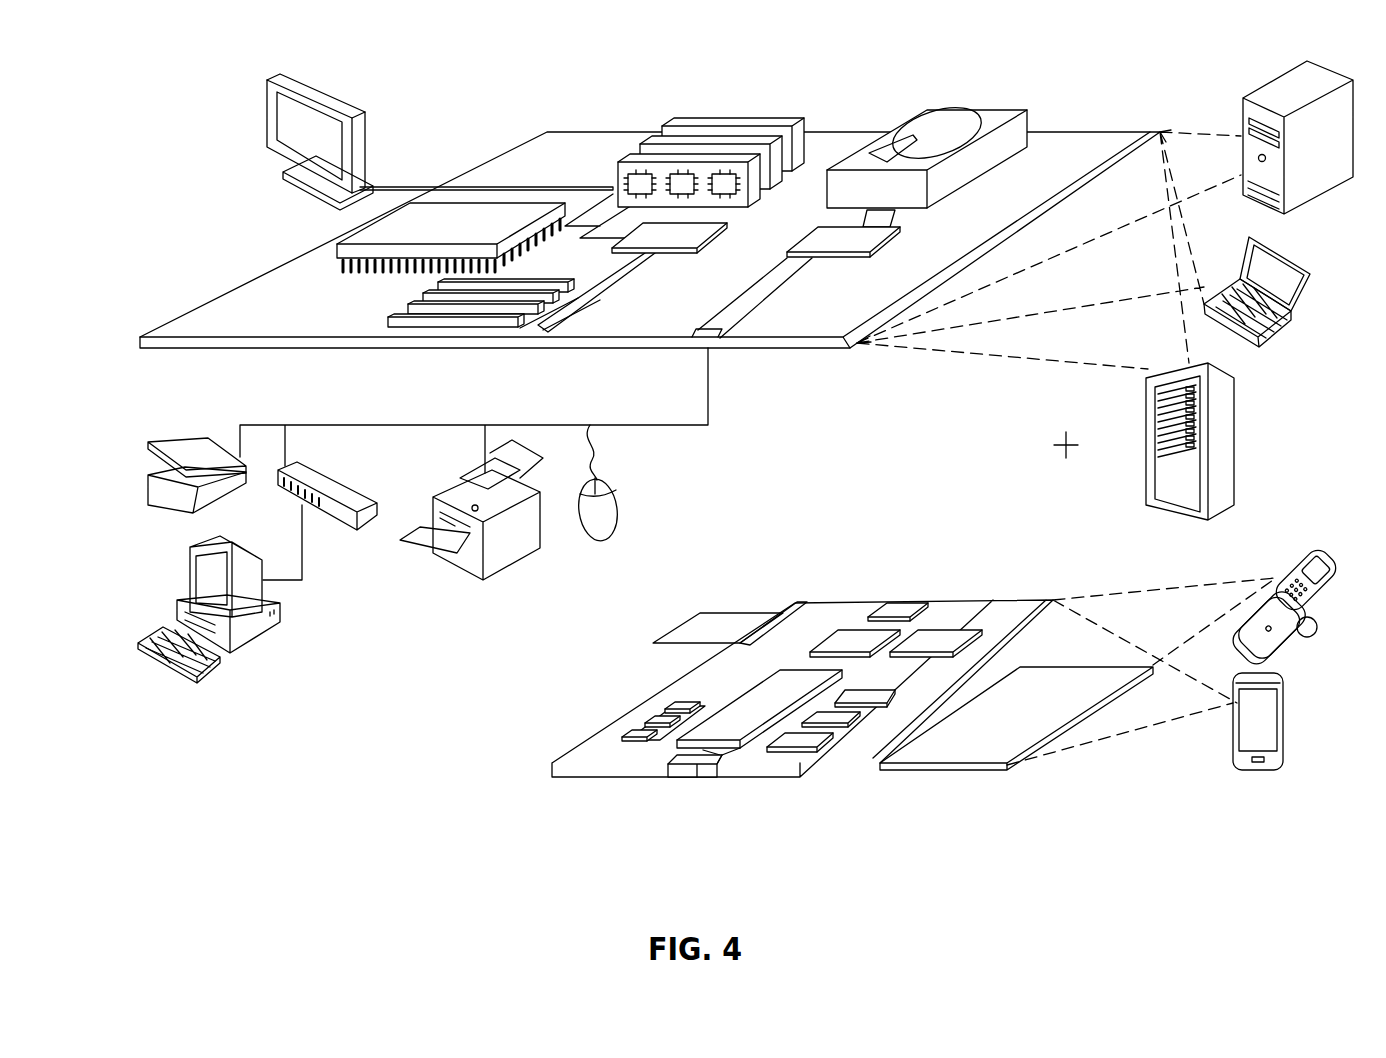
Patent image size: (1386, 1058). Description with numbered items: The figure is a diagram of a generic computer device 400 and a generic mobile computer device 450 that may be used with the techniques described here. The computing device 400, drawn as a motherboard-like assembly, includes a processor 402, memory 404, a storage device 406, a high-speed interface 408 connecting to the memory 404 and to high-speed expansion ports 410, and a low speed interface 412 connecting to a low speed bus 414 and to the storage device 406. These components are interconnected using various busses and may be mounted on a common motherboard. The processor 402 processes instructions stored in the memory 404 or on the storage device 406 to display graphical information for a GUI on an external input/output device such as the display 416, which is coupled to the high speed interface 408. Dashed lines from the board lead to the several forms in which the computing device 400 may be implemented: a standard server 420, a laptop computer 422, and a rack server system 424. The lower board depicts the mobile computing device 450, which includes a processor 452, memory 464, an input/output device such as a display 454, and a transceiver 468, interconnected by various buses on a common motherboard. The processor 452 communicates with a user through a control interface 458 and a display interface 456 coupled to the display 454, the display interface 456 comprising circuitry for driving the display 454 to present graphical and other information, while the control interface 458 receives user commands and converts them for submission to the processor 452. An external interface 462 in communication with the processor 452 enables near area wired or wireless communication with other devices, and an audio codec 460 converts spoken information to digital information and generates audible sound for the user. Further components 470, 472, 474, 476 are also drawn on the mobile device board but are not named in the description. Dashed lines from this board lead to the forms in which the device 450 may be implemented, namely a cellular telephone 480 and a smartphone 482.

The computing device 400 is at (463, 102).
The processor 402 is at (337, 250).
The memory 404 is at (684, 128).
The storage device 406 is at (918, 112).
The high-speed interface 408 is at (630, 243).
The high-speed expansion ports 410 is at (400, 315).
The low speed interface 412 is at (823, 236).
The low speed bus 414 is at (720, 338).
The display 416 is at (272, 80).
The standard server 420 is at (1241, 119).
The laptop computer 422 is at (1310, 272).
The rack server system 424 is at (1150, 469).
The mobile computer device 450 is at (528, 772).
The processor 452 is at (730, 738).
The display 454 is at (975, 750).
The display interface 456 is at (798, 743).
The control interface 458 is at (833, 716).
The audio codec 460 is at (860, 697).
The external interface 462 is at (697, 766).
The memory 464 is at (650, 722).
The transceiver 468 is at (933, 640).
The component 470 is at (904, 605).
The component 472 is at (782, 613).
The component 474 is at (712, 613).
The component 476 is at (855, 637).
The cellular telephone 480 is at (1290, 565).
The smartphone 482 is at (1233, 735).